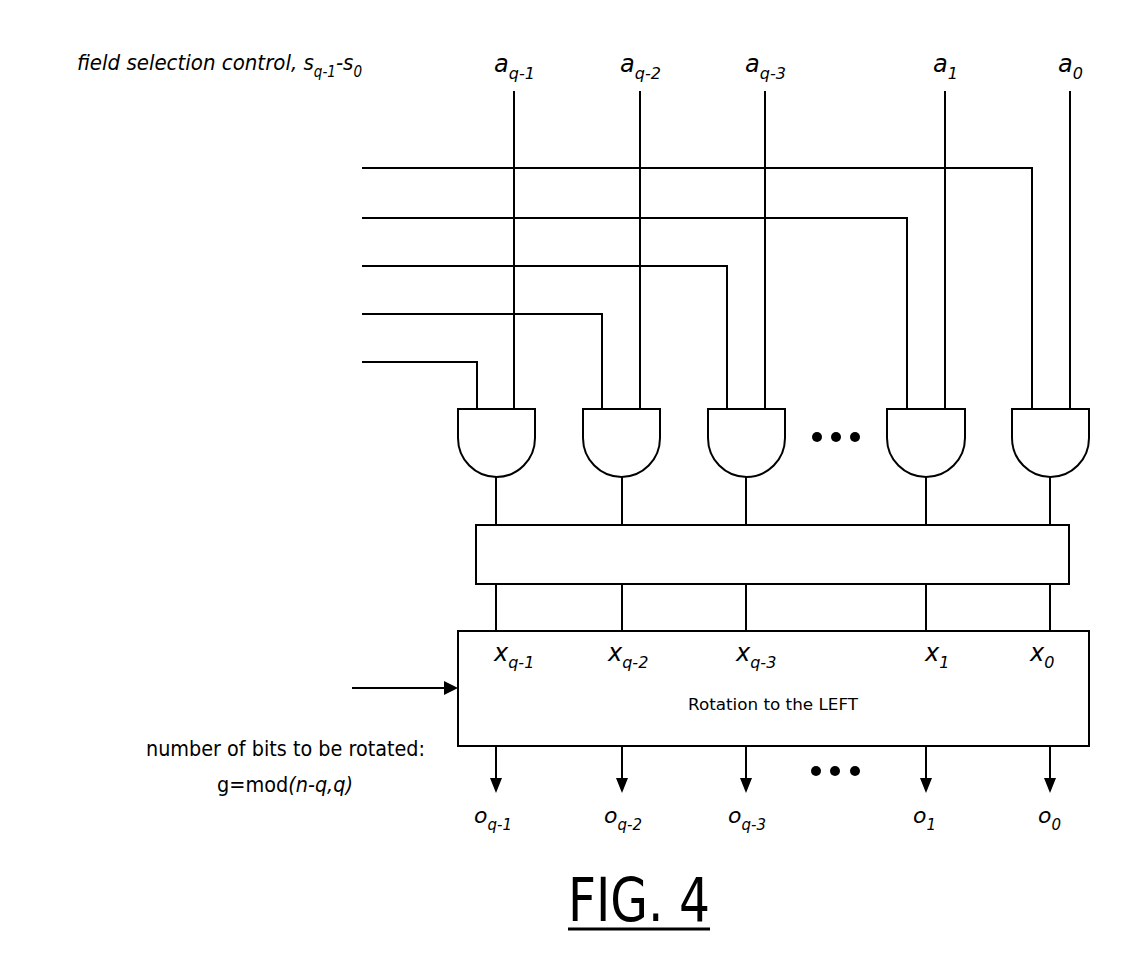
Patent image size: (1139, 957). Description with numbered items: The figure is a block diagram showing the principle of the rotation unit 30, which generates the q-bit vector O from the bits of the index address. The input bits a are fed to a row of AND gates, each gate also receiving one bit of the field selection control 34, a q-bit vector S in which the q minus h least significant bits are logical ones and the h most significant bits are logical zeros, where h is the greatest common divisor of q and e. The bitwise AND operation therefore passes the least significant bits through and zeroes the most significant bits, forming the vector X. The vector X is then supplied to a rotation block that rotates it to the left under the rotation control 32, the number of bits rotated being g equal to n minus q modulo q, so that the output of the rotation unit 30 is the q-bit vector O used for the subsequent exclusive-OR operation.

The rotation unit 30 is at (457, 508).
The rotation control 32 is at (402, 688).
The field selection control 34 is at (287, 161).